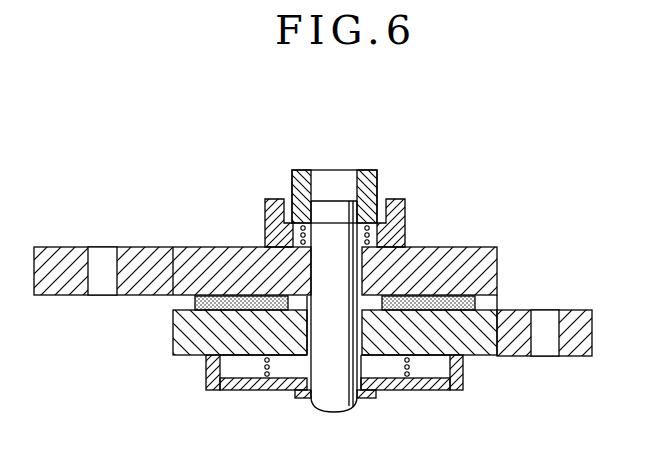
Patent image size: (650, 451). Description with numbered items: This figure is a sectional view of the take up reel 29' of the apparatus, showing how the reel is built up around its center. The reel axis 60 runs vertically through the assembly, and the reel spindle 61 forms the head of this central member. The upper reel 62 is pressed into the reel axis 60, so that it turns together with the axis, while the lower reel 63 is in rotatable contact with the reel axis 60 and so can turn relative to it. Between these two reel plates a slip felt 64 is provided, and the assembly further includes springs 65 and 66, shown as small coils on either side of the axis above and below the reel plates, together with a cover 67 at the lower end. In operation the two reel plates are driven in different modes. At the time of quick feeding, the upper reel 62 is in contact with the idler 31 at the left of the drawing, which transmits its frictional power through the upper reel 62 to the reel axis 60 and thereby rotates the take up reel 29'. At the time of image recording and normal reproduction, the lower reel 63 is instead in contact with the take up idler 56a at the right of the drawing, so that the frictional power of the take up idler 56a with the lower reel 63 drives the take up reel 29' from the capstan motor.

The take up reel 29' is at (322, 270).
The idler 31 is at (135, 252).
The take up idler 56a is at (577, 320).
The reel axis 60 is at (330, 205).
The reel spindle 61 is at (367, 177).
The upper reel 62 is at (472, 252).
The lower reel 63 is at (486, 347).
The slip felt 64 is at (480, 303).
The spring 65 is at (372, 229).
The spring 66 is at (418, 381).
The cover 67 is at (457, 389).